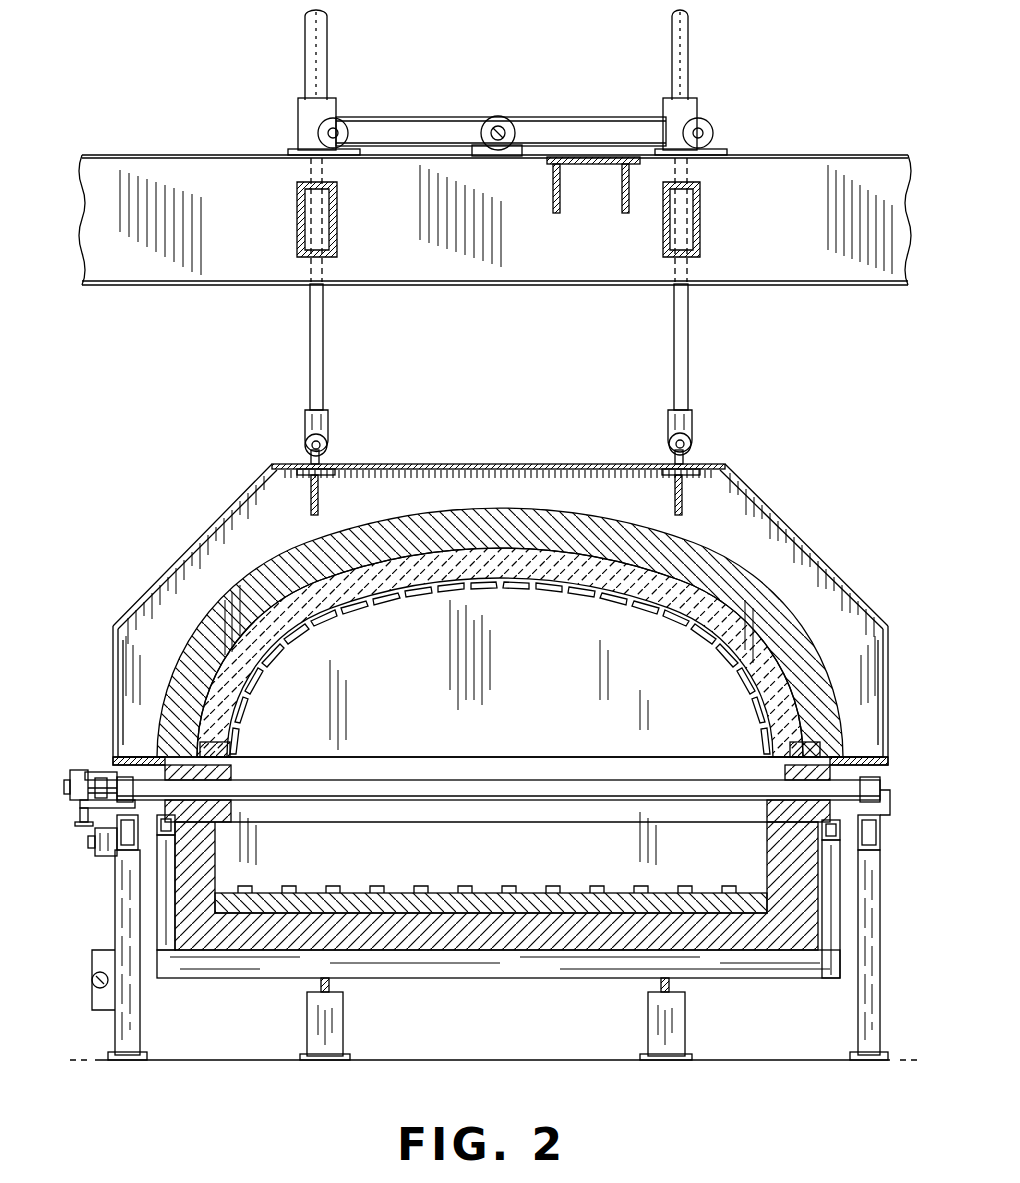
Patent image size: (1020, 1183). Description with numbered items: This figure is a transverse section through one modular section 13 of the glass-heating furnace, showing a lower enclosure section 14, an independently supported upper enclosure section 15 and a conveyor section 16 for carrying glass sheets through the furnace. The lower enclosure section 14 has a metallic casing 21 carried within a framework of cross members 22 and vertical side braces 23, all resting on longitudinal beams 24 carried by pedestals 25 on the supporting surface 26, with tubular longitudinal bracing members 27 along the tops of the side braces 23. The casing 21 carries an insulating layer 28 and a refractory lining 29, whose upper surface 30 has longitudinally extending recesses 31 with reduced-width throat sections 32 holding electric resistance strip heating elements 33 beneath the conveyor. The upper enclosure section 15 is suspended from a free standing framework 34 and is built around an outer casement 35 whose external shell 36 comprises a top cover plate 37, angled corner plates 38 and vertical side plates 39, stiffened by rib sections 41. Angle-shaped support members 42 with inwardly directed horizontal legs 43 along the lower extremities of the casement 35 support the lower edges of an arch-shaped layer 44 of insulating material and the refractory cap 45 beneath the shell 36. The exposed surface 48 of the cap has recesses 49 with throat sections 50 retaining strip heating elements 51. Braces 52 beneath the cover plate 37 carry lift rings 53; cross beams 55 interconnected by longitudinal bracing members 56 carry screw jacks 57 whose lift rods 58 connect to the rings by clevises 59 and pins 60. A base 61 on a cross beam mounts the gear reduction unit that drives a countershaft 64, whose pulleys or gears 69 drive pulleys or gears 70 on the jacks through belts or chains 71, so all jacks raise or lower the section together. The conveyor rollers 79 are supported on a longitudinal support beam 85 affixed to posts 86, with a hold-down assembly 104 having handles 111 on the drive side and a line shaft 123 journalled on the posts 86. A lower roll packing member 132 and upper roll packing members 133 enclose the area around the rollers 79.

The modular section 13 is at (852, 432).
The lower enclosure section 14 is at (455, 977).
The upper enclosure section 15 is at (205, 487).
The conveyor section 16 is at (68, 830).
The metallic casing 21 is at (240, 960).
The cross members 22 is at (373, 972).
The vertical side braces 23 is at (160, 905).
The longitudinal beams 24 is at (320, 962).
The pedestals 25 is at (685, 1035).
The supporting surface 26 is at (572, 1058).
The tubular longitudinal bracing members 27 is at (176, 830).
The insulating layer 28 is at (527, 952).
The refractory lining 29 is at (222, 845).
The upper surface 30 is at (358, 886).
The recesses 31 is at (475, 890).
The throat sections 32 is at (430, 886).
The electric resistance strip heating elements 33 is at (604, 888).
The free standing framework 34 is at (790, 142).
The outer casement 35 is at (800, 522).
The external shell 36 is at (445, 457).
The top cover plate 37 is at (500, 463).
The angled corner plates 38 is at (185, 565).
The vertical side plates 39 is at (113, 655).
The stiffener rib sections 41 is at (380, 504).
The angle-shaped support members 42 is at (127, 740).
The horizontal legs 43 is at (205, 757).
The layer of insulating material 44 is at (580, 532).
The refractory cap 45 is at (495, 580).
The exposed surface 48 is at (362, 620).
The recesses 49 is at (572, 590).
The throat sections 50 is at (640, 598).
The electric resistance strip heating elements 51 is at (681, 622).
The braces 52 is at (311, 492).
The lift rings 53 is at (304, 450).
The cross beams 55 is at (835, 285).
The longitudinal bracing members 56 is at (297, 235).
The screw jacks 57 is at (330, 100).
The lift rods 58 is at (323, 325).
The clevises 59 is at (328, 420).
The pins 60 is at (328, 445).
The base 61 is at (598, 165).
The countershaft 64 is at (498, 125).
The pulleys or gears 69 is at (493, 145).
The pulleys or gears 70 is at (320, 130).
The belts or chains 71 is at (410, 117).
The rollers 79 is at (455, 778).
The longitudinal support beam 85 is at (122, 842).
The posts 86 is at (140, 1025).
The hold-down assemblies 104 is at (84, 768).
The handles 111 is at (64, 787).
The line shaft 123 is at (95, 985).
The lower roll packing member 132 is at (232, 812).
The upper roll packing members 133 is at (232, 772).